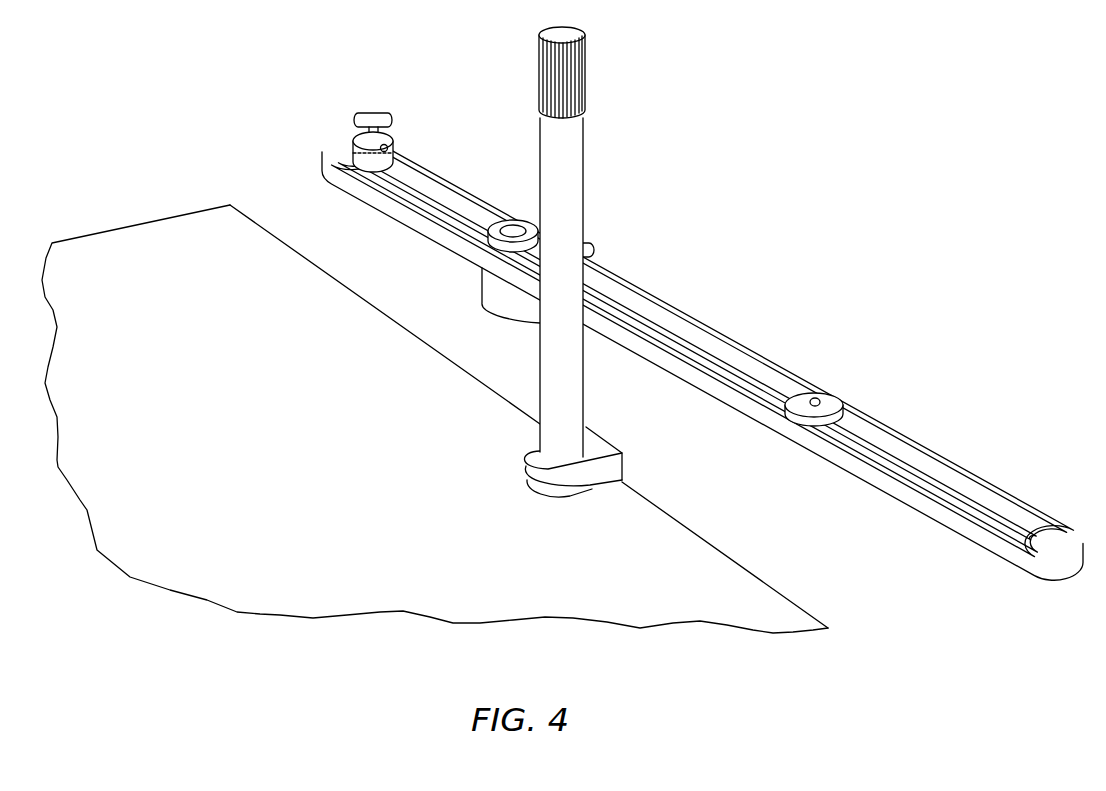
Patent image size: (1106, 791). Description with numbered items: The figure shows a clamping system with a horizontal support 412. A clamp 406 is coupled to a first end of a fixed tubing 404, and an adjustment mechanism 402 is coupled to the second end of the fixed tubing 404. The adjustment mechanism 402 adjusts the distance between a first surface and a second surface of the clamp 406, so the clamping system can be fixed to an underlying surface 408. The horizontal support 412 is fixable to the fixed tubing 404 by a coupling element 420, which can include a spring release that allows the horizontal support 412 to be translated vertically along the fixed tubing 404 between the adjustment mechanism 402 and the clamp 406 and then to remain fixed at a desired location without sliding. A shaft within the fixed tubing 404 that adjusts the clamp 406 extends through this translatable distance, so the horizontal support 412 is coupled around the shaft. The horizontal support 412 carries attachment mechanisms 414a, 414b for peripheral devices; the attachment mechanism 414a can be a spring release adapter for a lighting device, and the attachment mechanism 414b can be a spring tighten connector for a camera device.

The adjustment mechanism 402 is at (590, 64).
The fixed tubing 404 is at (578, 172).
The clamp 406 is at (594, 486).
The underlying surface 408 is at (720, 582).
The horizontal support 412 is at (673, 322).
The attachment mechanism 414a is at (385, 112).
The attachment mechanism 414b is at (834, 401).
The coupling element 420 is at (500, 293).